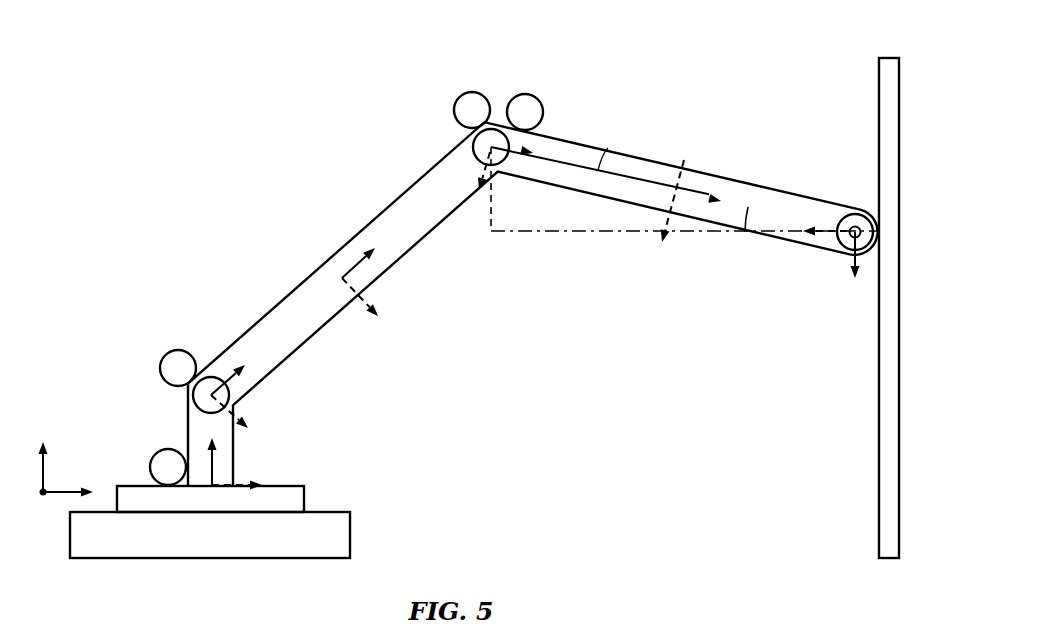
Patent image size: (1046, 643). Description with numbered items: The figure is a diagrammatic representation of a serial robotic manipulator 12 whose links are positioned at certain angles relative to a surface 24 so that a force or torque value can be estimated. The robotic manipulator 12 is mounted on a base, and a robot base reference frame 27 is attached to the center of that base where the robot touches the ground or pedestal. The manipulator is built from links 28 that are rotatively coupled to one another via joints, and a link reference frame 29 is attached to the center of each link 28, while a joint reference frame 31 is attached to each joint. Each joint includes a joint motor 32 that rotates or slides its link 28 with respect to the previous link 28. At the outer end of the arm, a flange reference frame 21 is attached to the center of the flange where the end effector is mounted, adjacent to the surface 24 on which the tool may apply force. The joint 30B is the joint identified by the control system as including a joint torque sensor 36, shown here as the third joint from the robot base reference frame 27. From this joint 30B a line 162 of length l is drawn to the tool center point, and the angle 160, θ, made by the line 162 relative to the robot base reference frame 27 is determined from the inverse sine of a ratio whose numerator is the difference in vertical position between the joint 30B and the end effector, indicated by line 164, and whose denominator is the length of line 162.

The robotic manipulator 12 is at (206, 60).
The flange reference frame 21 is at (848, 262).
The surface 24 is at (879, 124).
The robot base reference frame 27 is at (42, 481).
The link 28 is at (188, 431).
The link reference frame 29 is at (339, 280).
The joint 30B is at (470, 140).
The joint reference frame 31 is at (230, 374).
The joint motor 32 is at (173, 350).
The joint torque sensor 36 is at (470, 93).
The angle 160 is at (751, 219).
The line 162 is at (608, 148).
The line 164 is at (490, 210).